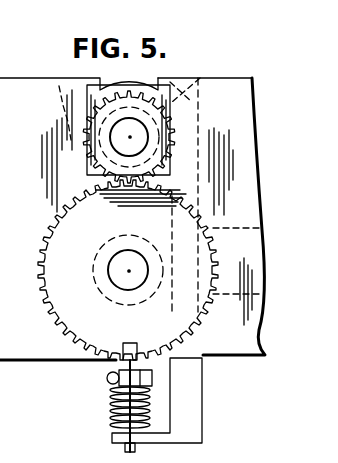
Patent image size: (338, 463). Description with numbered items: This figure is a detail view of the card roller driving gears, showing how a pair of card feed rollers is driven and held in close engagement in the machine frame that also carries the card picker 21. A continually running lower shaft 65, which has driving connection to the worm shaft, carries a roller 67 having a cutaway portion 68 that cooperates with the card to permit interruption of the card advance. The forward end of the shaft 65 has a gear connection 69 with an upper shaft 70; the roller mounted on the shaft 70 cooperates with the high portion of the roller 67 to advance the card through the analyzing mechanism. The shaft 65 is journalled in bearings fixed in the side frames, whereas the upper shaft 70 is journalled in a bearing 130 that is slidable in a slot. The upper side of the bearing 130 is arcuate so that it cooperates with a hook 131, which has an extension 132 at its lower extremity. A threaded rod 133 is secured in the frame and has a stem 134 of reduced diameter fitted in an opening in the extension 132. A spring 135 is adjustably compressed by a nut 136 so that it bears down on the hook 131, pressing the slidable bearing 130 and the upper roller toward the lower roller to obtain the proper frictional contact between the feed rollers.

The card picker 21 is at (58, 82).
The bearing 130 is at (198, 78).
The shaft 70 is at (132, 137).
The hook 131 is at (196, 153).
The gear connection 69 is at (76, 209).
The cutaway portion 68 is at (260, 228).
The shaft 65 is at (127, 270).
The roller 67 is at (260, 294).
The threaded rod 133 is at (117, 371).
The nut 136 is at (108, 384).
The spring 135 is at (140, 420).
The stem 134 is at (125, 452).
The extension 132 is at (153, 440).